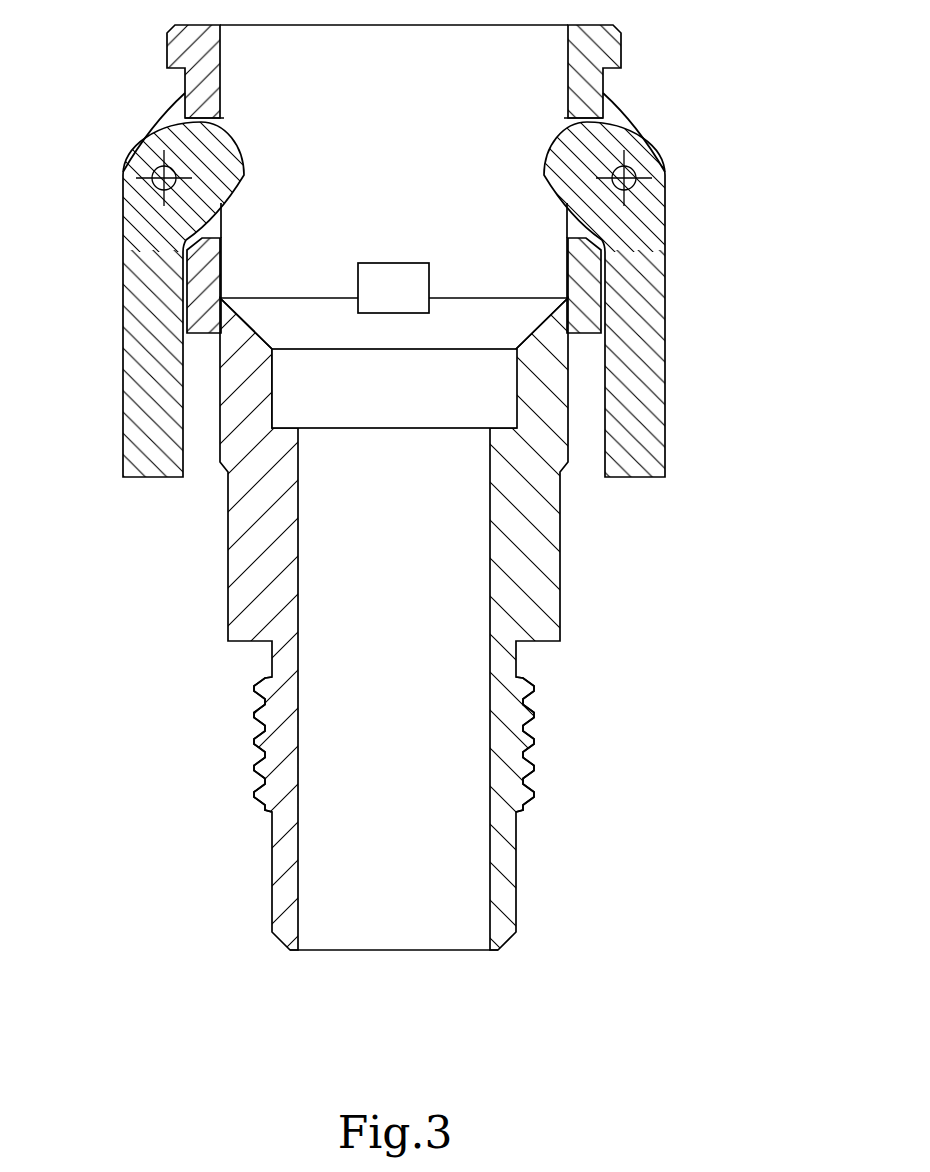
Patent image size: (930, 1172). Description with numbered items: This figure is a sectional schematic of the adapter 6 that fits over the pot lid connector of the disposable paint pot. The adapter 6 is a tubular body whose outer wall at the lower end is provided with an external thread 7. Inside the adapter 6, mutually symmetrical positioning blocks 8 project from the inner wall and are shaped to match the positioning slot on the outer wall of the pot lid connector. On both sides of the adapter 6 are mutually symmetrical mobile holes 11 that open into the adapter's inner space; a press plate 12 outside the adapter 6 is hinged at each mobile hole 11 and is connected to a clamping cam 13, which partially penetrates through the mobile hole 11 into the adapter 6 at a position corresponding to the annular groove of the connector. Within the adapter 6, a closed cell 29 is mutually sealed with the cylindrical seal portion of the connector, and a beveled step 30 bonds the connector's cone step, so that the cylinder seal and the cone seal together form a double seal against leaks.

The adapter 6 is at (515, 568).
The external thread 7 is at (533, 745).
The positioning block 8 is at (380, 287).
The mobile hole 11 is at (570, 223).
The press plate 12 is at (631, 395).
The clamping cam 13 is at (578, 157).
The closed cell 29 is at (270, 382).
The beveled step 30 is at (267, 348).